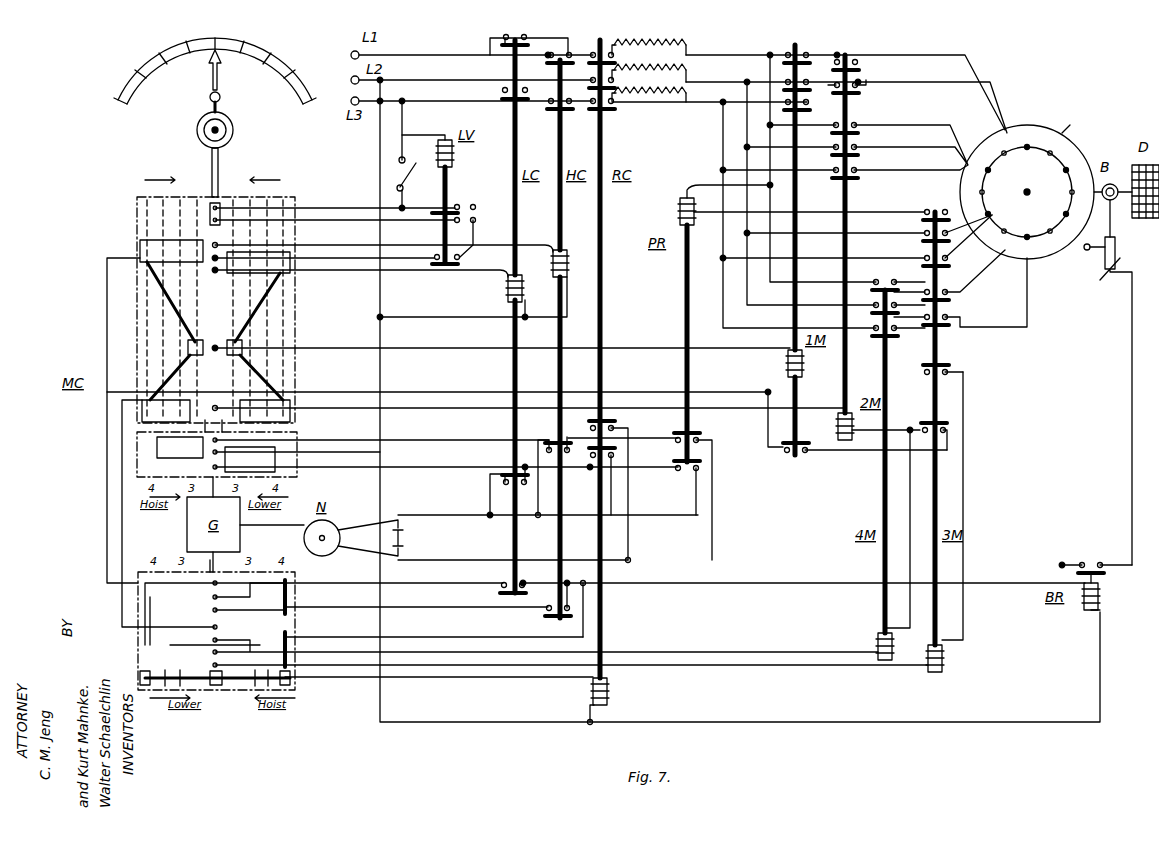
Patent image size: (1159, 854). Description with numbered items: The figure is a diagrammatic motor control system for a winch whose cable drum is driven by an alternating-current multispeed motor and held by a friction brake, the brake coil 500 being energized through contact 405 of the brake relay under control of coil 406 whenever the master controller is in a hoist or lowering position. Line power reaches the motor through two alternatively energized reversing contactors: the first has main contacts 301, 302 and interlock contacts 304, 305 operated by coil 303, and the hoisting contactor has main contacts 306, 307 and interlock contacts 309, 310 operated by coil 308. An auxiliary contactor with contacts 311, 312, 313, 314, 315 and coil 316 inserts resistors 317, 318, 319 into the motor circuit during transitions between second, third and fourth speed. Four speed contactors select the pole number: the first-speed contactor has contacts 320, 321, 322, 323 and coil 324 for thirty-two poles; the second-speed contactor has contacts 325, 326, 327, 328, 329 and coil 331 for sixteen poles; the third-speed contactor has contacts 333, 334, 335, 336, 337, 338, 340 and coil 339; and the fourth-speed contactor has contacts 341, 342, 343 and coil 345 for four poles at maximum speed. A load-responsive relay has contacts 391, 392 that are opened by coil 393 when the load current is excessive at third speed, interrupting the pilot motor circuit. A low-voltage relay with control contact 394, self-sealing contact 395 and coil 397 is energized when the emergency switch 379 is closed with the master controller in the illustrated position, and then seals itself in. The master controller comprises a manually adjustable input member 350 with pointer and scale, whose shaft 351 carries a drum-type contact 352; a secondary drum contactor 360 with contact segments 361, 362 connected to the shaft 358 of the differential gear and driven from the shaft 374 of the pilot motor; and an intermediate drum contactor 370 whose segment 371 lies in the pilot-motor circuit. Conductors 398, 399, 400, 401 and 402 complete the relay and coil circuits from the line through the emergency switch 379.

The main contact 301 is at (519, 44).
The main contact 302 is at (503, 107).
The coil 303 is at (506, 285).
The interlock contact 304 is at (502, 480).
The interlock contact 305 is at (500, 592).
The main contact 306 is at (568, 55).
The main contact 307 is at (567, 108).
The coil 308 is at (562, 256).
The interlock contact 309 is at (564, 477).
The interlock contact 310 is at (545, 620).
The contact 311 is at (613, 53).
The contact 312 is at (616, 90).
The contact 313 is at (615, 110).
The contact 314 is at (618, 417).
The contact 315 is at (618, 450).
The coil 316 is at (608, 687).
The resistor 317 is at (655, 38).
The resistor 318 is at (688, 70).
The resistor 319 is at (688, 95).
The contact 320 is at (797, 52).
The contact 321 is at (805, 78).
The contact 322 is at (800, 112).
The contact 323 is at (797, 458).
The coil 324 is at (785, 364).
The contact 325 is at (858, 135).
The contact 326 is at (858, 157).
The contact 327 is at (858, 180).
The contact 328 is at (854, 58).
The contact 329 is at (868, 90).
The coil 331 is at (839, 426).
The contact 333 is at (937, 210).
The contact 334 is at (926, 241).
The contact 335 is at (942, 268).
The contact 336 is at (958, 294).
The contact 337 is at (958, 322).
The contact 338 is at (956, 365).
The coil 339 is at (943, 662).
The contact 340 is at (931, 426).
The contact 341 is at (893, 276).
The contact 342 is at (872, 313).
The contact 343 is at (886, 336).
The coil 345 is at (876, 638).
The input member 350 is at (224, 93).
The shaft 351 is at (221, 153).
The contact 352 is at (295, 305).
The shaft 358 is at (208, 560).
The drum contactor 360 is at (295, 623).
The contact segment 361 is at (295, 598).
The contact segment 362 is at (185, 680).
The drum contactor 370 is at (295, 474).
The contact segment 371 is at (157, 444).
The shaft 374 is at (272, 540).
The emergency switch 379 is at (418, 156).
The contact 391 is at (688, 478).
The contact 392 is at (695, 432).
The relay coil 393 is at (680, 200).
The control contact 394 is at (463, 260).
The self-sealing contact 395 is at (360, 230).
The coil 397 is at (438, 144).
The conductor 398 is at (380, 290).
The conductor 399 is at (407, 376).
The conductor 400 is at (447, 642).
The conductor 401 is at (105, 345).
The conductor 402 is at (122, 476).
The contact 405 is at (1095, 557).
The coil 406 is at (1100, 602).
The brake coil 500 is at (1115, 255).